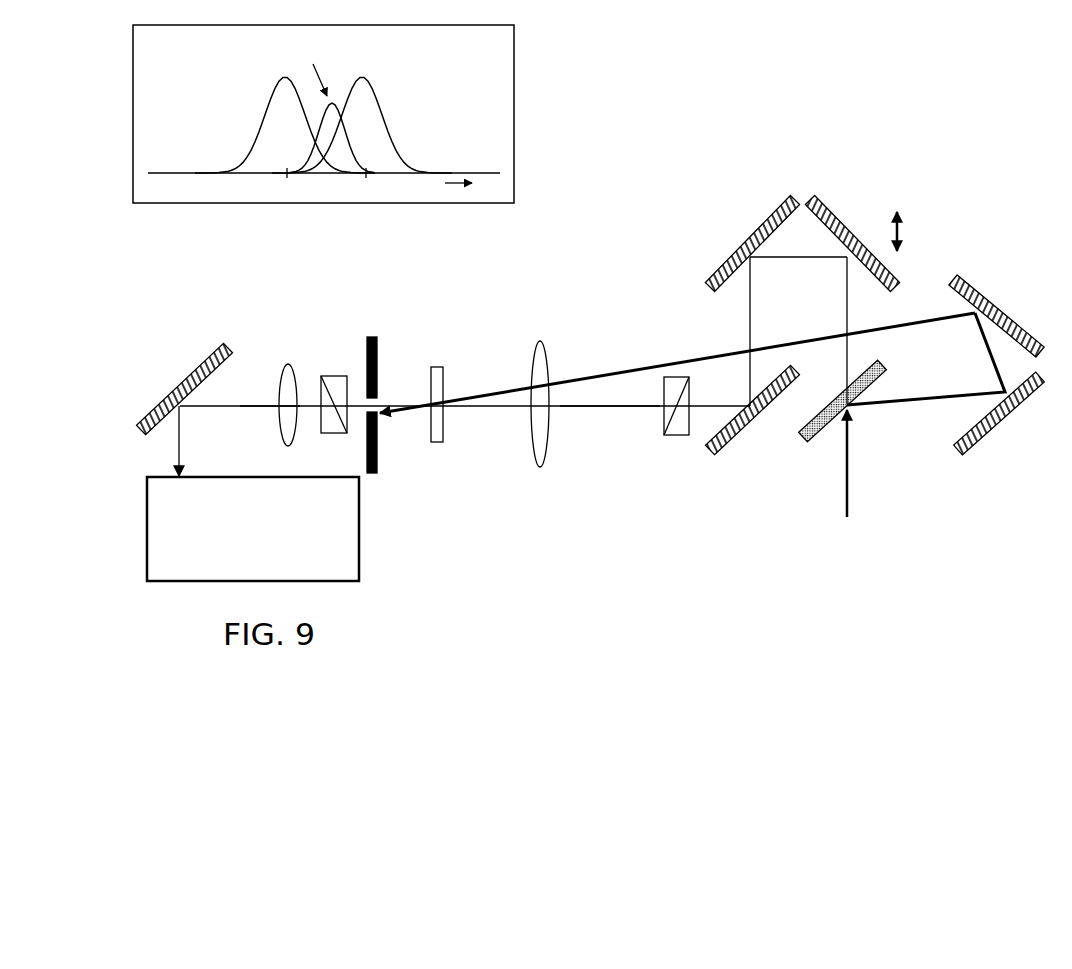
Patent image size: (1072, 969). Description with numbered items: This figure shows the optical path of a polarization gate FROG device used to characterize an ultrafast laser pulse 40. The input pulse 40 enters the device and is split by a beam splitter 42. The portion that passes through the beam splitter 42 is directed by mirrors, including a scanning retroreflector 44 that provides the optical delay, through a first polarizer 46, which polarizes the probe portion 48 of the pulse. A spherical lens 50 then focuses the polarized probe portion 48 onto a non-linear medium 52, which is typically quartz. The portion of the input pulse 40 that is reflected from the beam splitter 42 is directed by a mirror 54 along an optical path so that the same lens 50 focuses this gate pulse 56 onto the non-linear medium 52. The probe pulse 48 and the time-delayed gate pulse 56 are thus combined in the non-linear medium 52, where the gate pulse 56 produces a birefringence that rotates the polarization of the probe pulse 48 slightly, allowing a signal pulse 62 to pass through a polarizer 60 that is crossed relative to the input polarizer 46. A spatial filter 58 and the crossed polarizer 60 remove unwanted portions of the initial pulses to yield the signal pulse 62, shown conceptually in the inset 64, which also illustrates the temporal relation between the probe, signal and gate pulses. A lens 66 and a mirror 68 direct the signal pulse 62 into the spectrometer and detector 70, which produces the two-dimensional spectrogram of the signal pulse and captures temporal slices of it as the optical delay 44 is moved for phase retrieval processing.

The ultrafast laser pulse 40 is at (857, 498).
The beam splitter 42 is at (818, 443).
The scanning retroreflector 44 is at (723, 245).
The first polarizer 46 is at (672, 443).
The probe portion 48 is at (602, 413).
The spherical lens 50 is at (537, 338).
The non-linear medium 52 is at (436, 362).
The mirror 54 is at (996, 290).
The gate pulse 56 is at (633, 362).
The spatial filter 58 is at (371, 328).
The polarizer 60 is at (333, 372).
The signal pulse 62 is at (268, 396).
The inset 64 is at (515, 58).
The lens 66 is at (289, 350).
The mirror 68 is at (192, 356).
The spectrometer and detector 70 is at (367, 543).